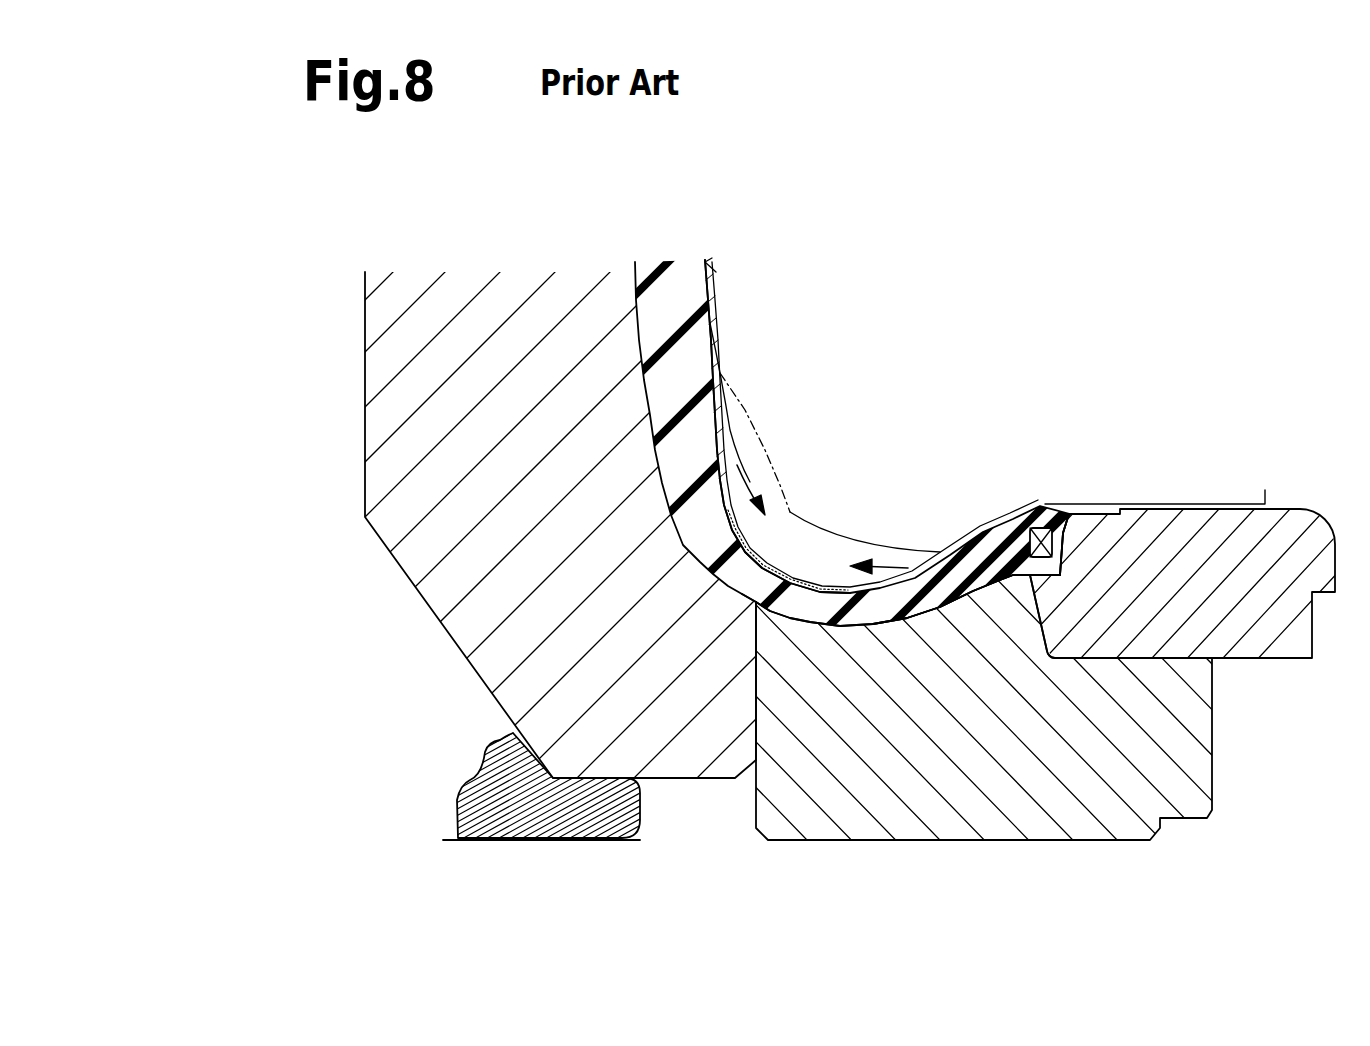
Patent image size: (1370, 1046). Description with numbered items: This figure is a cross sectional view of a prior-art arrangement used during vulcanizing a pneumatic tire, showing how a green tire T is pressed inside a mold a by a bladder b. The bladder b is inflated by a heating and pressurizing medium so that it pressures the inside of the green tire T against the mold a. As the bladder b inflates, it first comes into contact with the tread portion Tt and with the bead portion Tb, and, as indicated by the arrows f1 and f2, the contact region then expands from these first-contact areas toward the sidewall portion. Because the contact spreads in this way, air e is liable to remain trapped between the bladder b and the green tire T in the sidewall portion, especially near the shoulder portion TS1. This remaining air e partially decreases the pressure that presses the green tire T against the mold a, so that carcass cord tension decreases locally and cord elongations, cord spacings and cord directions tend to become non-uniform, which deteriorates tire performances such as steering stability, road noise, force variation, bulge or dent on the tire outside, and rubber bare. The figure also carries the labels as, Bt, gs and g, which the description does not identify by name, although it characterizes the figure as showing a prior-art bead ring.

The green tire T is at (648, 265).
The bladder b is at (716, 292).
The tread portion Tt is at (732, 326).
The arrow f1 is at (745, 482).
The arrow f2 is at (880, 562).
The rim seat surface as is at (953, 600).
The bead portion Tb is at (1015, 495).
The bead toe Bt is at (1071, 510).
The ring seat surface gs is at (1188, 503).
The ring g is at (1268, 650).
The mold a is at (976, 855).
The air e is at (757, 615).
The shoulder portion TS1 is at (743, 622).